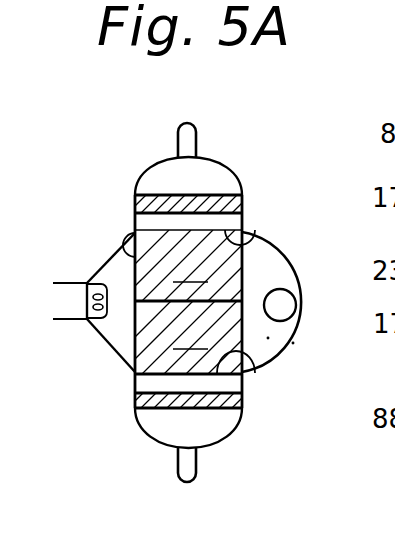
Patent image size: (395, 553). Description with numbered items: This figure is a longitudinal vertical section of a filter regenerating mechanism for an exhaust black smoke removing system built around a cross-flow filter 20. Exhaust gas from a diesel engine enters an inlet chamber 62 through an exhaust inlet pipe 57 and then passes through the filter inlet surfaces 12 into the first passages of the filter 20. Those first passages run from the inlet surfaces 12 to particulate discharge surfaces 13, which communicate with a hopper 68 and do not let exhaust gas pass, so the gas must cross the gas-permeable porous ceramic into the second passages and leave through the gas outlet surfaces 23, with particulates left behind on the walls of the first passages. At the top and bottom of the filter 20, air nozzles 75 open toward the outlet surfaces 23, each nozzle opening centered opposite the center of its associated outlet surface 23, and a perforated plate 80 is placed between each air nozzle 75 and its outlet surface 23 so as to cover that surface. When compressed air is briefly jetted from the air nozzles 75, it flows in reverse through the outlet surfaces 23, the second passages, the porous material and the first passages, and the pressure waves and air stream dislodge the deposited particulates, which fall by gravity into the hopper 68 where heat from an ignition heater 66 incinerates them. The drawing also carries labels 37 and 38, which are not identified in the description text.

The filter inlet surface 12 is at (243, 283).
The particulate discharge surface 13 is at (126, 242).
The filter 20 is at (200, 301).
The gas outlet surface 23 is at (253, 234).
The disk surface 37 is at (293, 343).
The dome cap 38 is at (224, 168).
The exhaust inlet pipe 57 is at (283, 303).
The inlet chamber 62 is at (268, 338).
The ignition heater 66 is at (78, 283).
The hopper 68 is at (112, 346).
The air nozzle 75 is at (179, 128).
The perforated plate 80 is at (172, 196).